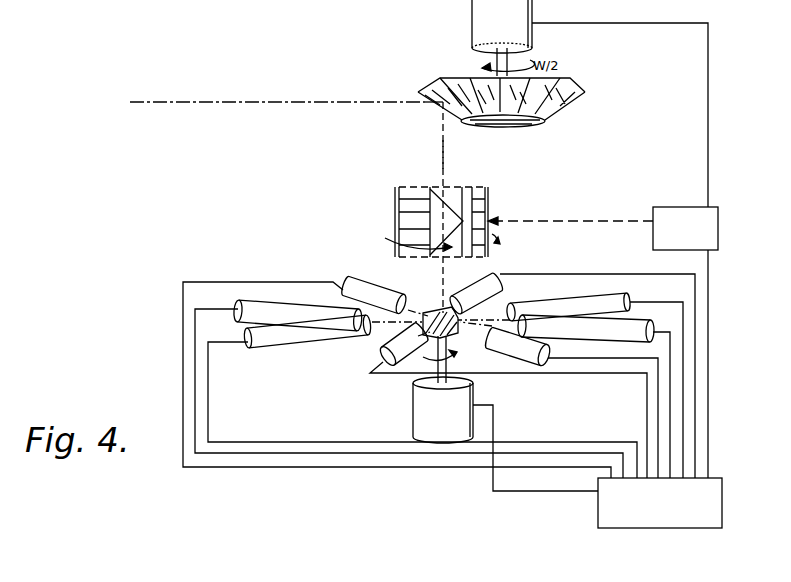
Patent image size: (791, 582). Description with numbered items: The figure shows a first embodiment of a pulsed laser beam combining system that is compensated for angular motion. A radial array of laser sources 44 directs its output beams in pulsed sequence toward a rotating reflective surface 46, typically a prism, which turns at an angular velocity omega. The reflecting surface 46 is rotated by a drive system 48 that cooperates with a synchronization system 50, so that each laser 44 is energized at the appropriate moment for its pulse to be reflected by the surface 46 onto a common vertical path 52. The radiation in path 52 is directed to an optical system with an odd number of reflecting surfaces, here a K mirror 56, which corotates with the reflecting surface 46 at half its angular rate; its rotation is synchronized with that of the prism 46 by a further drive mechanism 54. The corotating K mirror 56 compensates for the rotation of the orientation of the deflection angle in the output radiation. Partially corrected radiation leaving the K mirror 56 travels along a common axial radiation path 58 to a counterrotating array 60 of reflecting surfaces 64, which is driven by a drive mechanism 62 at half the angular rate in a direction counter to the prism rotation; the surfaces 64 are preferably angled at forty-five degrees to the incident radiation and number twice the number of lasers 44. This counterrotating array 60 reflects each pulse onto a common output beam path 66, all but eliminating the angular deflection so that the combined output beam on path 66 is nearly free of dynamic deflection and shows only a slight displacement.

The laser sources 44 is at (310, 332).
The rotating reflective surface 46 is at (439, 320).
The drive system 48 is at (413, 400).
The synchronization system 50 is at (660, 520).
The common vertical path 52 is at (437, 306).
The drive mechanism 54 is at (718, 220).
The K mirror 56 is at (398, 207).
The common axial radiation path 58 is at (443, 165).
The counterrotating array 60 is at (540, 121).
The drive mechanism 62 is at (472, 14).
The reflecting surfaces 64 is at (563, 90).
The common output beam path 66 is at (398, 100).